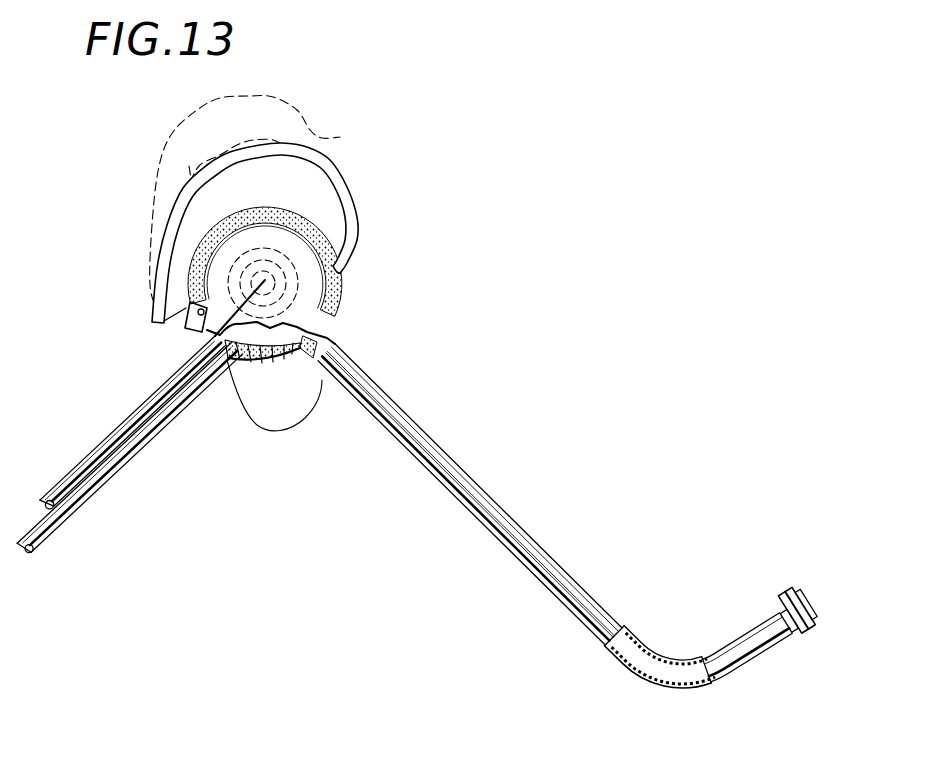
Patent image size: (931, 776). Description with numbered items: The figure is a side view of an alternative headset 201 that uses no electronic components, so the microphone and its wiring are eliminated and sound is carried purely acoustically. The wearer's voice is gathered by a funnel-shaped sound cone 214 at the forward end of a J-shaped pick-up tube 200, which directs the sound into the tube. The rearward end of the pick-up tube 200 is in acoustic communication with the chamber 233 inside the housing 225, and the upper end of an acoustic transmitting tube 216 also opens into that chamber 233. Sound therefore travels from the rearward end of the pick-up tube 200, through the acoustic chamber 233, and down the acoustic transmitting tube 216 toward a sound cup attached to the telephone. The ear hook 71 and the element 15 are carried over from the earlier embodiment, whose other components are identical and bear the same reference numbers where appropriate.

The ear hook 71 is at (343, 172).
The headset 201 is at (358, 278).
The housing 225 is at (186, 316).
The chamber 233 is at (270, 363).
The microphone boom tube 15 is at (93, 443).
The acoustic transmitting tube 216 is at (117, 470).
The pick-up tube 200 is at (413, 418).
The sound cone 214 is at (802, 590).